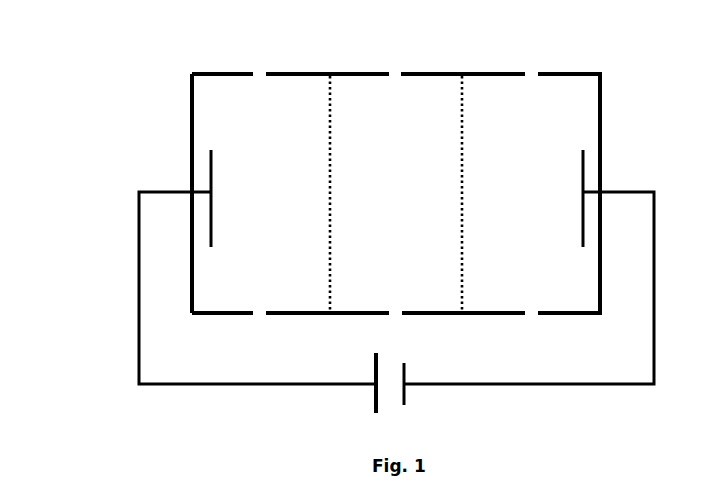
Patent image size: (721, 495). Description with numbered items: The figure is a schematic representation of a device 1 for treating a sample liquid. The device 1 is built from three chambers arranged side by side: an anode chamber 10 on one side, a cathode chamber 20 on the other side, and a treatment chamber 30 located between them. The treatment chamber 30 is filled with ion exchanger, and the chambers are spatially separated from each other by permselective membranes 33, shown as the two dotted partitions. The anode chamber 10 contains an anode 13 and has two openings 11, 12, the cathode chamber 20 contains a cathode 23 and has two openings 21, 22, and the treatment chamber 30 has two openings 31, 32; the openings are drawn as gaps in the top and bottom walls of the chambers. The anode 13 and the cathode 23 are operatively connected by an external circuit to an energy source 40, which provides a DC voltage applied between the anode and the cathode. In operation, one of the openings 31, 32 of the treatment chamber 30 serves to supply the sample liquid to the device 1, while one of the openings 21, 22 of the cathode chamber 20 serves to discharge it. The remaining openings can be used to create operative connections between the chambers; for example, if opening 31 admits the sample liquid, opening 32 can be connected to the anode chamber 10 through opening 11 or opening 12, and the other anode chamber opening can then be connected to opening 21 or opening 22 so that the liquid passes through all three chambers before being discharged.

The device 1 is at (95, 67).
The anode chamber 10 is at (222, 193).
The opening 11 is at (262, 320).
The opening 12 is at (260, 68).
The anode 13 is at (216, 251).
The cathode chamber 20 is at (500, 193).
The opening 21 is at (533, 320).
The opening 22 is at (533, 68).
The cathode 23 is at (576, 251).
The treatment chamber 30 is at (327, 193).
The opening 31 is at (395, 68).
The opening 32 is at (398, 319).
The permselective membranes 33 is at (459, 238).
The energy source 40 is at (394, 413).